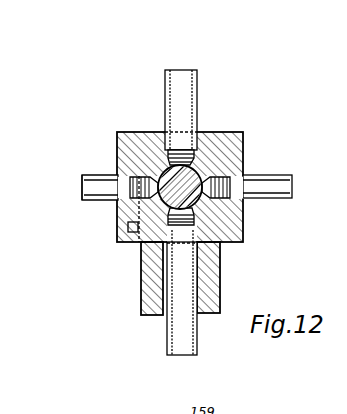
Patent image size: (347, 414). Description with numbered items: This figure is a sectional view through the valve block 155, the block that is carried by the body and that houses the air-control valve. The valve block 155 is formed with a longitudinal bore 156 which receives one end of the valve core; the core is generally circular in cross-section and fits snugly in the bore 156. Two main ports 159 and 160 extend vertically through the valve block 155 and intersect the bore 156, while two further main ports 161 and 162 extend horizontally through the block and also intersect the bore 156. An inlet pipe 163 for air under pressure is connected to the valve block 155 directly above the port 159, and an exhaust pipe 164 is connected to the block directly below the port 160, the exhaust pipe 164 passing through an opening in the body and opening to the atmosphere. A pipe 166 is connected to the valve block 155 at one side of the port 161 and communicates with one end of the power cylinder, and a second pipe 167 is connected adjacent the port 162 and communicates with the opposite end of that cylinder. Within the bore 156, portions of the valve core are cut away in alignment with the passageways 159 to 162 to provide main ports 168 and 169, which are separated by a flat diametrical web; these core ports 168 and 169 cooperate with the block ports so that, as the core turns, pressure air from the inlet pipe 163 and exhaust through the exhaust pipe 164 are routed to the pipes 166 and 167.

The valve block 155 is at (234, 130).
The longitudinal bore 156 is at (233, 208).
The main port 159 is at (244, 142).
The main port 160 is at (226, 244).
The main port 161 is at (130, 203).
The main port 162 is at (229, 182).
The inlet pipe 163 is at (197, 83).
The exhaust pipe 164 is at (185, 334).
The pipe 166 is at (105, 188).
The second pipe 167 is at (292, 183).
The main port 168 is at (164, 160).
The main port 169 is at (205, 205).